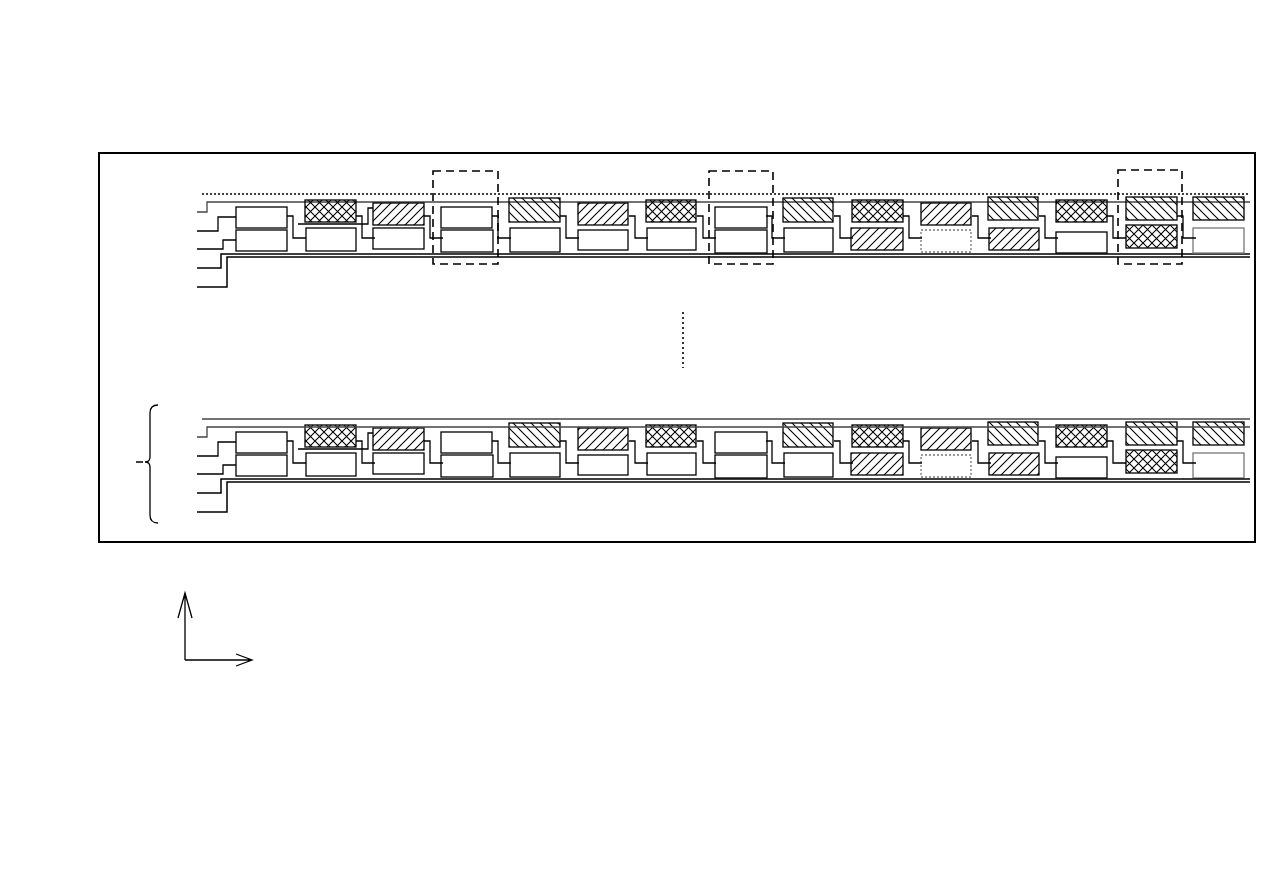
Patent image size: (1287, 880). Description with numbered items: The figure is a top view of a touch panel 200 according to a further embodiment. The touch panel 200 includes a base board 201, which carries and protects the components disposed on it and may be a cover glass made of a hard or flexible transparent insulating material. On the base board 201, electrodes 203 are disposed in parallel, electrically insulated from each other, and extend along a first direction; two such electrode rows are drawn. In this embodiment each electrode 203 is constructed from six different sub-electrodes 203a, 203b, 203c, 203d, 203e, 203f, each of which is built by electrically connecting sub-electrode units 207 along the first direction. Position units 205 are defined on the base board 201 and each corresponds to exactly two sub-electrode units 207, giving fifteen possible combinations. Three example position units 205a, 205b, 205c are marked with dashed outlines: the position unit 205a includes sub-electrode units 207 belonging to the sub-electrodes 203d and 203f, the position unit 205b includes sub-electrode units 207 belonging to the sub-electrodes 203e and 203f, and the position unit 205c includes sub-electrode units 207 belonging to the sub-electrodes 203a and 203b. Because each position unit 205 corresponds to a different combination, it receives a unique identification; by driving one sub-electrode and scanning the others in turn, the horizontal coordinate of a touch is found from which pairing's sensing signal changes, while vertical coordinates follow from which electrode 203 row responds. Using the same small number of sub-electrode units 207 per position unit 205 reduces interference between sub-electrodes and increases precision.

The touch panel 200 is at (1035, 82).
The base board 201 is at (1215, 152).
The electrode 203 is at (158, 180).
The sub-electrode 203a is at (703, 194).
The sub-electrode 203b is at (703, 211).
The sub-electrode 203c is at (196, 228).
The sub-electrode 203d is at (196, 249).
The sub-electrode 203e is at (703, 265).
The sub-electrode 203f is at (703, 276).
The position unit 205 is at (475, 102).
The position unit 205a is at (468, 168).
The position unit 205b is at (743, 168).
The position unit 205c is at (1152, 168).
The sub-electrode unit 207 is at (1160, 241).